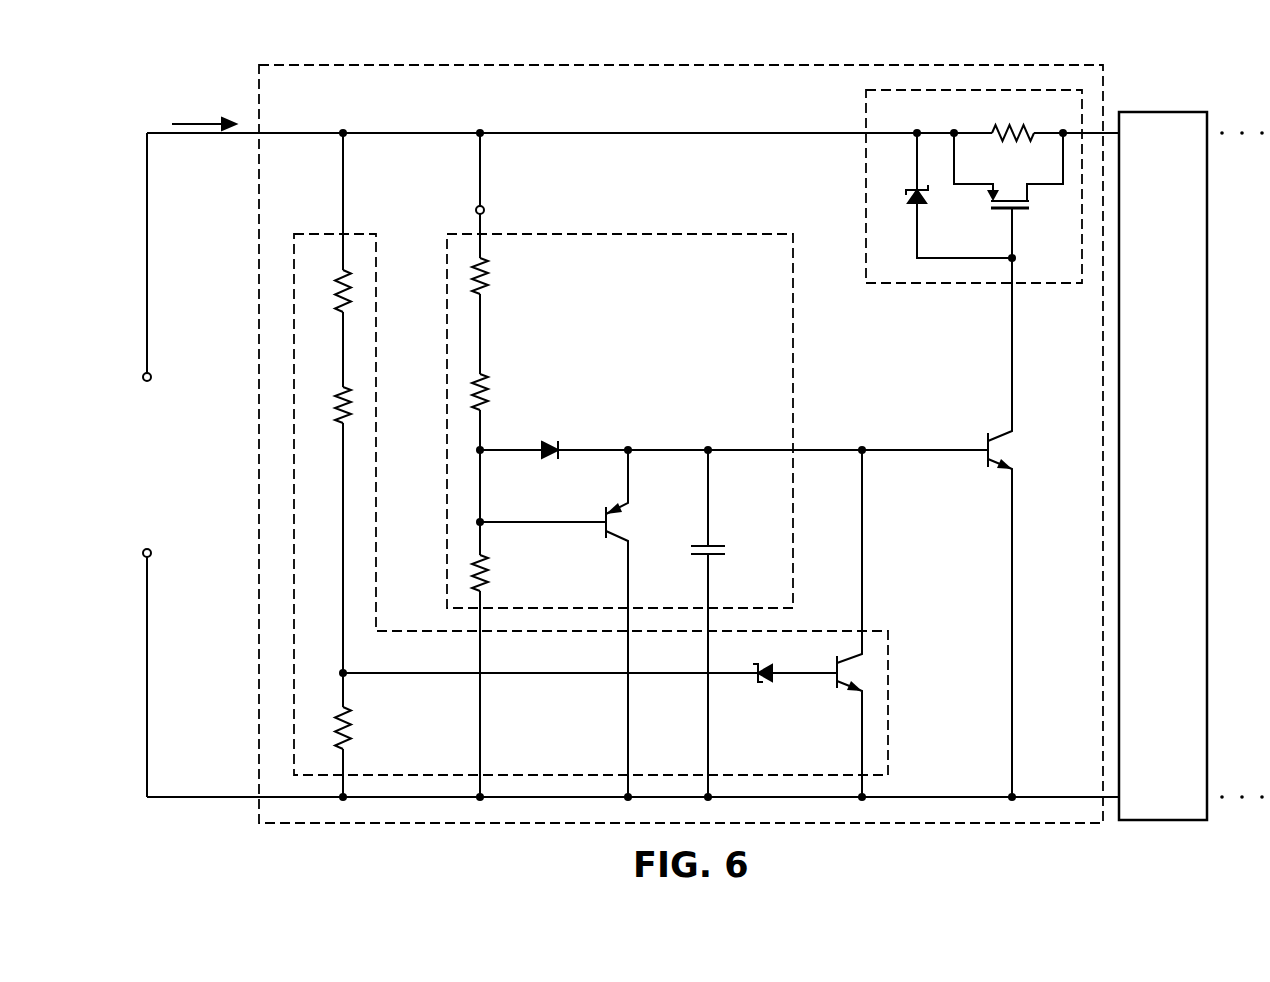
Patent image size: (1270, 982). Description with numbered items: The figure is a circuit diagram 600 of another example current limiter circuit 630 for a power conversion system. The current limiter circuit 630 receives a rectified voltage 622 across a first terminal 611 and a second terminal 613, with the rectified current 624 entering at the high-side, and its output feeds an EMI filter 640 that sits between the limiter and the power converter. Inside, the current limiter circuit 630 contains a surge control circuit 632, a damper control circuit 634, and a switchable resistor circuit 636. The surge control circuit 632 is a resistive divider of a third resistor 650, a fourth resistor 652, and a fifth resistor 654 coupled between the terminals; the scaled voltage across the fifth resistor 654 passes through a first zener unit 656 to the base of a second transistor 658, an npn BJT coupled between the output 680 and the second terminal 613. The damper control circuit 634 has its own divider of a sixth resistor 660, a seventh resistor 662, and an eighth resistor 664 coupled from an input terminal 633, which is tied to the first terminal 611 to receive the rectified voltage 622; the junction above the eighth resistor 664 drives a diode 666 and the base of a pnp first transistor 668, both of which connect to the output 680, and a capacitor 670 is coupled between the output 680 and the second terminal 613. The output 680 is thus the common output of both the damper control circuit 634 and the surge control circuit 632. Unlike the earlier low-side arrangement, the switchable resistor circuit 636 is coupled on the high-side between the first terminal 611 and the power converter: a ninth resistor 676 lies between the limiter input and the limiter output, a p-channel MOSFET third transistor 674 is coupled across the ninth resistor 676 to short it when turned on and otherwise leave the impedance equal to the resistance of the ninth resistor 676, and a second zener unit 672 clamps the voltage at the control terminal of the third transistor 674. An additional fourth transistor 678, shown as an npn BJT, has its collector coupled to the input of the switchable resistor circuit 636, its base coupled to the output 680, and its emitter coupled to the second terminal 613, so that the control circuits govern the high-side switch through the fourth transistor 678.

The circuit diagram 600 is at (712, 36).
The rectified current 624 is at (183, 93).
The current limiter circuit 630 is at (259, 232).
The surge control circuit 632 is at (362, 233).
The input terminal 633 is at (485, 209).
The damper control circuit 634 is at (640, 233).
The switchable resistor circuit 636 is at (937, 288).
The EMI filter 640 is at (1208, 330).
The terminal 611 is at (151, 380).
The terminal 613 is at (151, 556).
The rectified voltage 622 is at (143, 475).
The resistor R3 650 is at (353, 280).
The resistor R4 652 is at (355, 408).
The resistor R5 654 is at (352, 730).
The zener unit VR1 656 is at (763, 688).
The transistor Q2 658 is at (846, 695).
The resistor R6 660 is at (523, 283).
The resistor R7 662 is at (523, 395).
The resistor R8 664 is at (521, 578).
The diode D1 666 is at (552, 440).
The transistor Q1 668 is at (614, 540).
The capacitor C1 670 is at (740, 524).
The zener unit VR2 672 is at (932, 196).
The transistor Q3 674 is at (1025, 215).
The resistor R9 676 is at (1022, 144).
The transistor Q4 678 is at (997, 432).
The output 680 is at (886, 444).